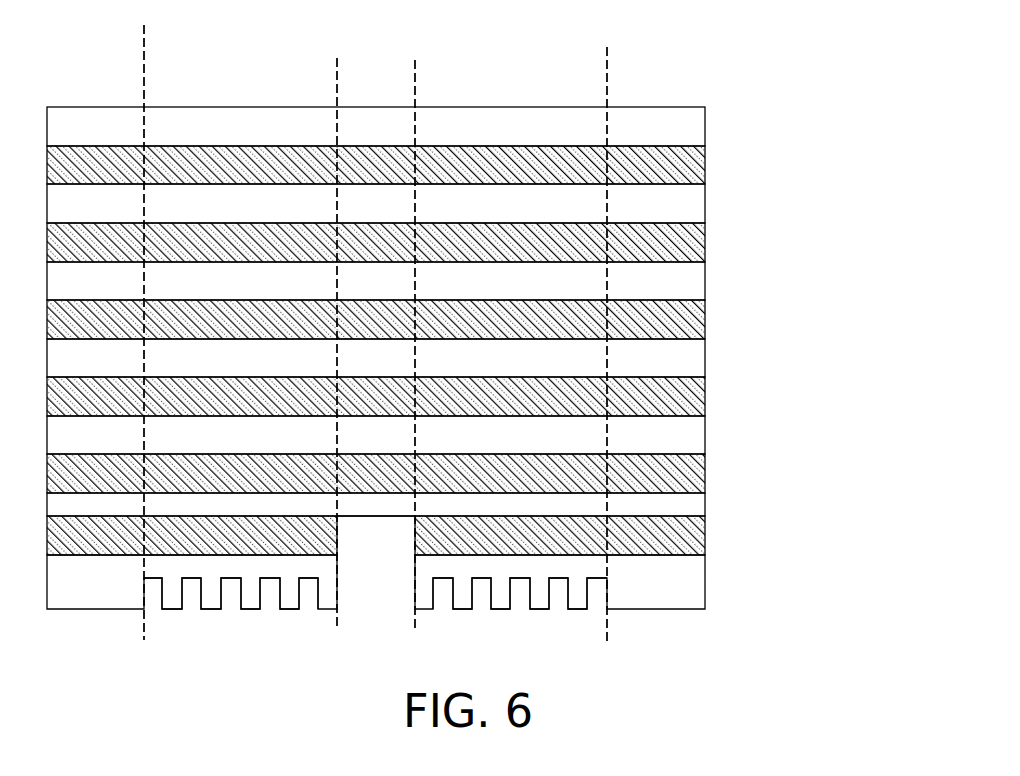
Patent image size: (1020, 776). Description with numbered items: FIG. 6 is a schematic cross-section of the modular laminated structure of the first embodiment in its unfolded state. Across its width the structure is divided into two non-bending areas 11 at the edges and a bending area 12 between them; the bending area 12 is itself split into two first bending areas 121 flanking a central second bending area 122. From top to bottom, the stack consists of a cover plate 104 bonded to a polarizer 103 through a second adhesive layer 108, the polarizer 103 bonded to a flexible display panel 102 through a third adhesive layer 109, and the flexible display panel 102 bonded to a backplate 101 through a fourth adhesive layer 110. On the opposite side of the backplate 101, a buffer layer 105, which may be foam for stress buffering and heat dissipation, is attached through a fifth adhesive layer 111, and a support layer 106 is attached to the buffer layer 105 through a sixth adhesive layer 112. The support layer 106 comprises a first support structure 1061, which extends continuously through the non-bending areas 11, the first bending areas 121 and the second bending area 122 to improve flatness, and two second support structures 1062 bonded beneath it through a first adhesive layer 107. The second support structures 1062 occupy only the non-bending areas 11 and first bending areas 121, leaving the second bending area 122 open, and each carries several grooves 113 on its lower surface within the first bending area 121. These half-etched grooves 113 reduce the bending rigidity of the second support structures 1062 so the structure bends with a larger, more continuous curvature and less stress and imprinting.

The non-bending area 11 is at (47, 86).
The bending area 12 is at (375, 321).
The first bending area 121 is at (337, 86).
The second bending area 122 is at (376, 336).
The backplate 101 is at (705, 358).
The flexible display panel 102 is at (705, 281).
The polarizer 103 is at (705, 203).
The cover plate 104 is at (705, 126).
The buffer layer 105 is at (705, 435).
The support layer 106 is at (463, 529).
The first support structure 1061 is at (705, 505).
The second support structure 1062 is at (705, 582).
The first adhesive layer 107 is at (705, 536).
The second adhesive layer 108 is at (705, 165).
The third adhesive layer 109 is at (705, 242).
The fourth adhesive layer 110 is at (705, 319).
The fifth adhesive layer 111 is at (705, 396).
The sixth adhesive layer 112 is at (705, 473).
The groove 113 is at (269, 597).